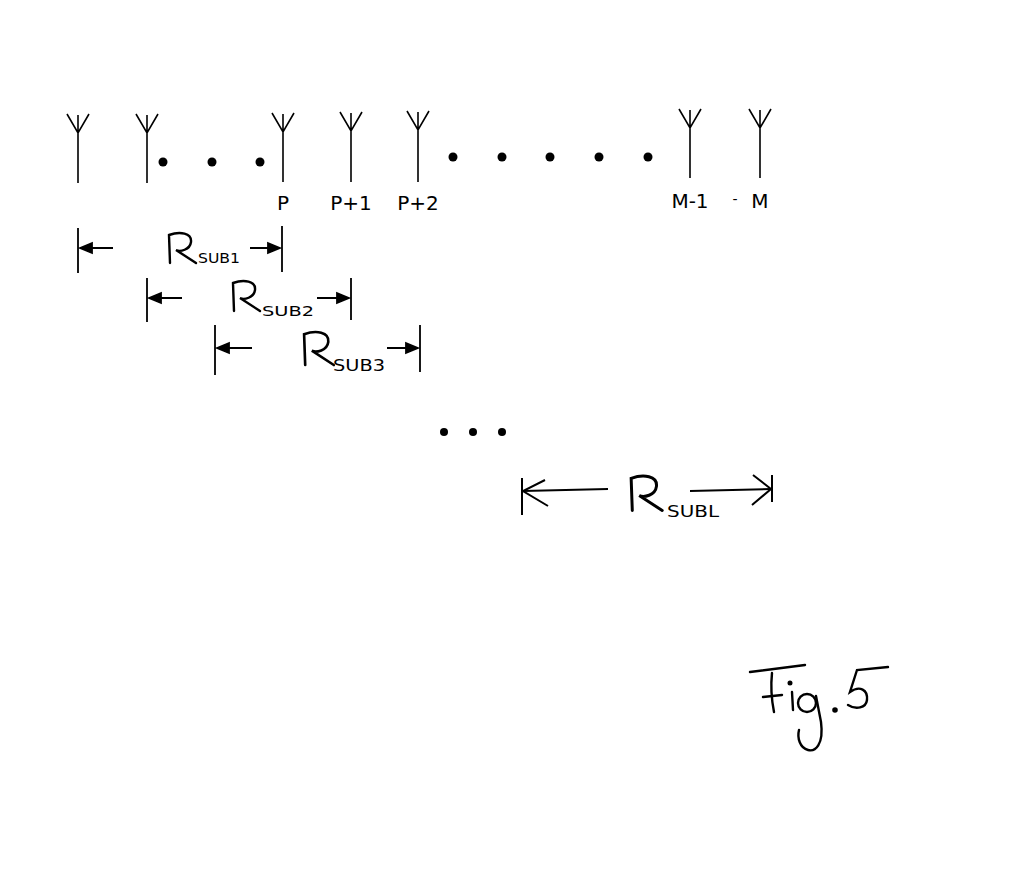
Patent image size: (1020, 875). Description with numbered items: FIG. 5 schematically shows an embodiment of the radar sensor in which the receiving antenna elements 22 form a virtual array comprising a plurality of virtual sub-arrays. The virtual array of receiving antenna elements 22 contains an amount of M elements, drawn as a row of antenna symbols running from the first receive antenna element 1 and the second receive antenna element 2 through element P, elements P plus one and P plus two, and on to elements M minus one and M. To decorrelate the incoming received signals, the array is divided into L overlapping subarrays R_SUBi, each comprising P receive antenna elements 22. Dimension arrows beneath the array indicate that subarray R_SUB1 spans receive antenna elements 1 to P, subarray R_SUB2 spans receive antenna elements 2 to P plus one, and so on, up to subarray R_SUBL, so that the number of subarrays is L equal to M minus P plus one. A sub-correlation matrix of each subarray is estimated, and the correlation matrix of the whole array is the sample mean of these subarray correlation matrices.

The receiving antenna element 22 is at (459, 113).
The first receive antenna element 1 is at (78, 164).
The second receive antenna element 2 is at (147, 164).